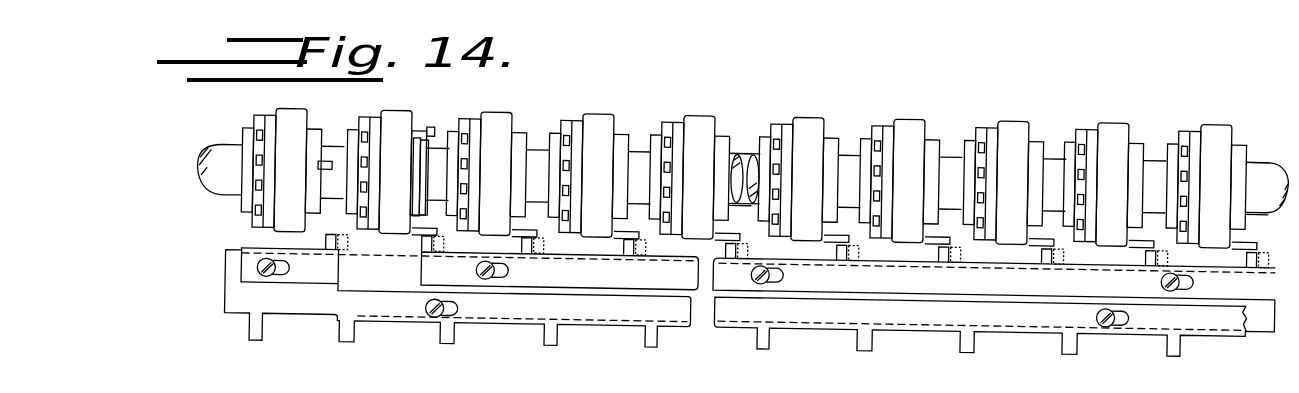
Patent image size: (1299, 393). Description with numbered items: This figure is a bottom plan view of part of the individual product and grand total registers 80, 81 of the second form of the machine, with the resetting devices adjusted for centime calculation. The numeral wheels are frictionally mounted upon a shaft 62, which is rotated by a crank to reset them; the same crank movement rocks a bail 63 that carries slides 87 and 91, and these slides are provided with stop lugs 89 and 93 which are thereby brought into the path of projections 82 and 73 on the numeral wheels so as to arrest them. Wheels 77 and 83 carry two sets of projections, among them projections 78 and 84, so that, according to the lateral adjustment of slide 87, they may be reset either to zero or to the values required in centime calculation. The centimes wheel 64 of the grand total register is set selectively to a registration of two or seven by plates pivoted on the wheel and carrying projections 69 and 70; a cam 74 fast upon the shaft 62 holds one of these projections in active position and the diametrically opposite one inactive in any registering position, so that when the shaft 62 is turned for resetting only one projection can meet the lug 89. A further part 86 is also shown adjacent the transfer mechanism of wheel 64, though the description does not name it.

The shaft 62 is at (212, 186).
The bail 63 is at (320, 306).
The centimes wheel 64 is at (388, 110).
The projection 69 is at (431, 124).
The projection 70 is at (438, 232).
The projection 73 is at (327, 160).
The cam 74 is at (420, 175).
The wheel 77 is at (505, 112).
The projections 78 is at (540, 232).
The register 80 is at (597, 110).
The register 81 is at (286, 110).
The projections 82 is at (641, 232).
The wheel 83 is at (916, 110).
The projections 84 is at (958, 232).
The transfer arm 86 is at (430, 140).
The slide 87 is at (637, 276).
The stop lug 89 is at (426, 249).
The slide 91 is at (308, 276).
The stop lug 93 is at (337, 236).